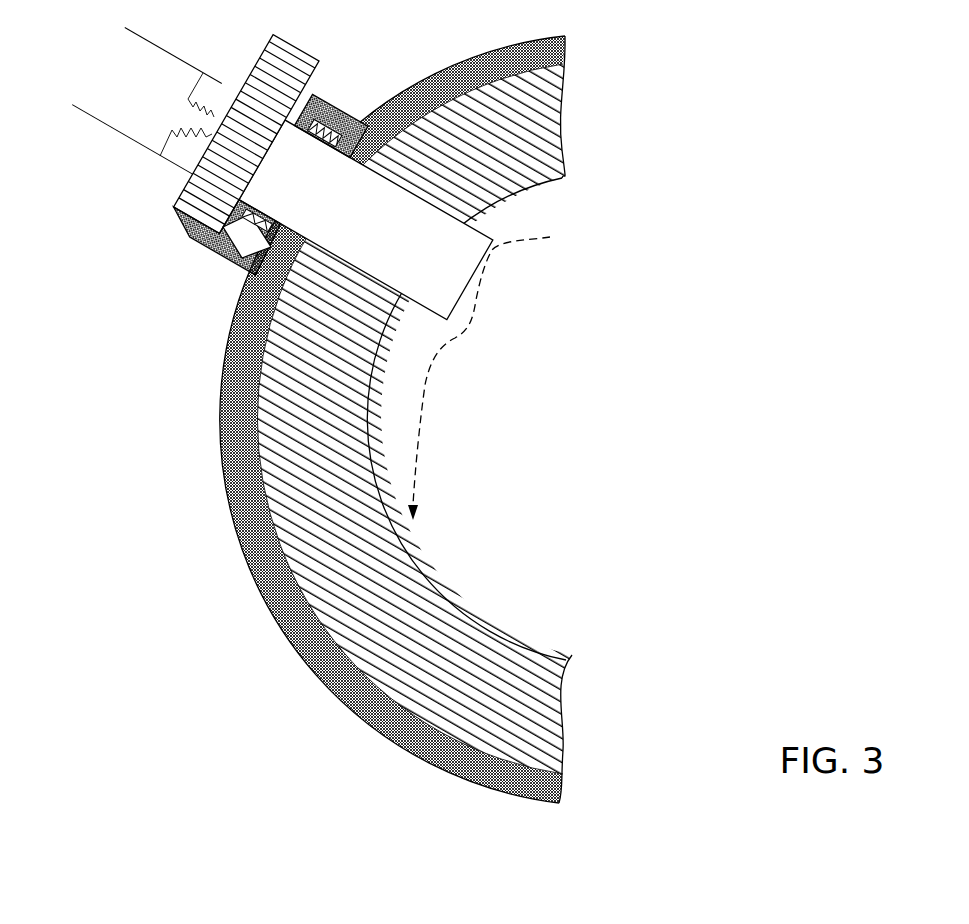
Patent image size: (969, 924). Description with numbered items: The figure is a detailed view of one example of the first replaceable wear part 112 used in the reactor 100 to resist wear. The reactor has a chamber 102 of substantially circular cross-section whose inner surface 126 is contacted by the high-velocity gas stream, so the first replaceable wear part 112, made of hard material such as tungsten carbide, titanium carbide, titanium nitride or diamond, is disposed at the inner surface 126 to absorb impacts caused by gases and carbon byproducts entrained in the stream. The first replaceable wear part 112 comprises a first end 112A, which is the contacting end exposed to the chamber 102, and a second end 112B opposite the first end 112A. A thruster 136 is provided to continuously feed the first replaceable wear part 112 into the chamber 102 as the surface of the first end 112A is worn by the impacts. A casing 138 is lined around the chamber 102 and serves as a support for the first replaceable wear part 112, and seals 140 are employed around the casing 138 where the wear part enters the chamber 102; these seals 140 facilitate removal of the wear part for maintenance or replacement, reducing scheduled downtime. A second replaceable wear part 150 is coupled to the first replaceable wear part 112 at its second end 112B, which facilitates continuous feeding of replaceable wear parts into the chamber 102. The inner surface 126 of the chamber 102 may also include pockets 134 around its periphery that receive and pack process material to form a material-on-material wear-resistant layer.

The reactor 100 is at (552, 330).
The chamber 102 is at (232, 437).
The first replaceable wear part 112 is at (308, 190).
The first end 112A is at (428, 298).
The second end 112B is at (182, 148).
The inner surface 126 is at (462, 608).
The pockets 134 is at (337, 497).
The thruster 136 is at (185, 193).
The casing 138 is at (360, 132).
The seals 140 is at (330, 127).
The second replaceable wear part 150 is at (110, 92).